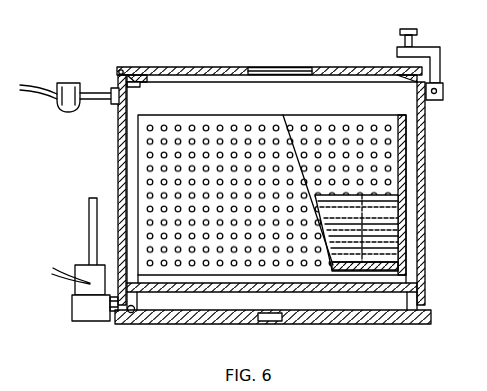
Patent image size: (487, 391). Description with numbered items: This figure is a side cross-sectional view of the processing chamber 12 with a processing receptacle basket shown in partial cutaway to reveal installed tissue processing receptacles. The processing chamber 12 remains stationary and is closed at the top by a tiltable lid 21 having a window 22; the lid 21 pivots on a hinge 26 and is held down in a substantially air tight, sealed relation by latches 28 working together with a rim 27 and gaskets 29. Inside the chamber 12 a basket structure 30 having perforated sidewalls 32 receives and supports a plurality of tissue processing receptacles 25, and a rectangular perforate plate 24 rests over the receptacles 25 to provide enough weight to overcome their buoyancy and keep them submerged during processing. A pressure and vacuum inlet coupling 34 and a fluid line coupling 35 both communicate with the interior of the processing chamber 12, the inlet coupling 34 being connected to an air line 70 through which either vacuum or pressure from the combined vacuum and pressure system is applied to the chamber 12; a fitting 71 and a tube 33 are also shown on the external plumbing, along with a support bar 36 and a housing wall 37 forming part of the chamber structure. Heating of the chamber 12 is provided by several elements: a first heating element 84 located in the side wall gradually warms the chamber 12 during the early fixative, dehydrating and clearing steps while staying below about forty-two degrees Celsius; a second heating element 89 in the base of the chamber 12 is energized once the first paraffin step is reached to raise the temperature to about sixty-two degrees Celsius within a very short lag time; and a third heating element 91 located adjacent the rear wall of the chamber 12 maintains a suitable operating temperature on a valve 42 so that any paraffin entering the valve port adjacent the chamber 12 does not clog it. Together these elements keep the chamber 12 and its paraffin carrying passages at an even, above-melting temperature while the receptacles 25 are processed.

The processing chamber 12 is at (380, 325).
The tiltable lid 21 is at (198, 67).
The window 22 is at (262, 67).
The rectangular perforate plate 24 is at (375, 196).
The tissue processing receptacles 25 is at (378, 262).
The hinge 26 is at (119, 70).
The rim 27 is at (143, 86).
The latches 28 is at (428, 50).
The gaskets 29 is at (136, 74).
The basket structure 30 is at (283, 100).
The perforated sidewalls 32 is at (276, 118).
The tube 33 is at (88, 215).
The pressure and vacuum inlet coupling 34 is at (108, 104).
The fluid line coupling 35 is at (114, 320).
The bottom support bar 36 is at (202, 292).
The housing wall 37 is at (406, 318).
The valve 42 is at (78, 320).
The air line 70 is at (25, 86).
The hose fitting 71 is at (60, 105).
The first heating element 84 is at (426, 195).
The second heating element 89 is at (268, 321).
The third heating element 91 is at (76, 290).